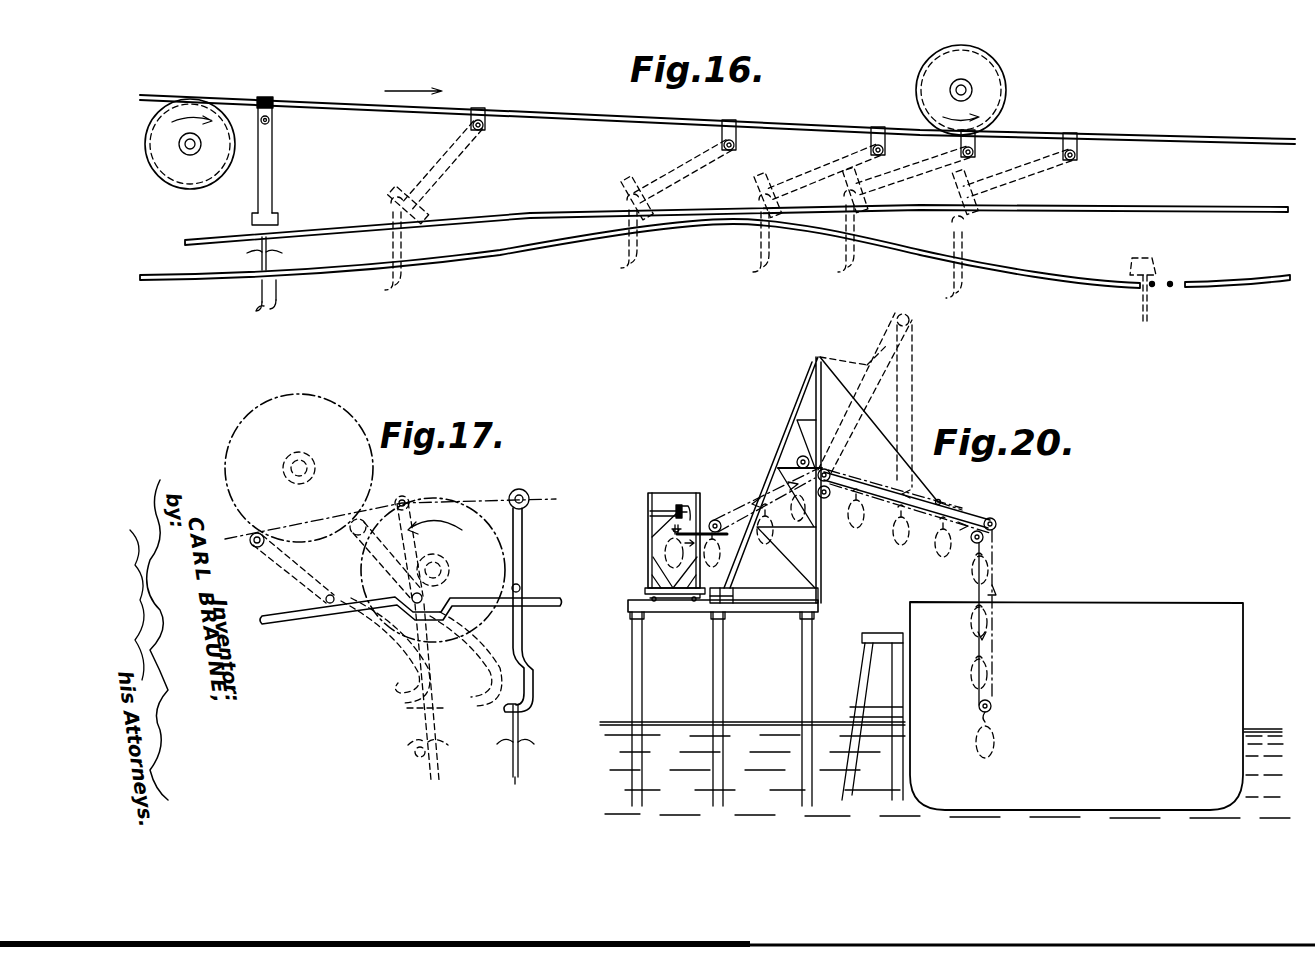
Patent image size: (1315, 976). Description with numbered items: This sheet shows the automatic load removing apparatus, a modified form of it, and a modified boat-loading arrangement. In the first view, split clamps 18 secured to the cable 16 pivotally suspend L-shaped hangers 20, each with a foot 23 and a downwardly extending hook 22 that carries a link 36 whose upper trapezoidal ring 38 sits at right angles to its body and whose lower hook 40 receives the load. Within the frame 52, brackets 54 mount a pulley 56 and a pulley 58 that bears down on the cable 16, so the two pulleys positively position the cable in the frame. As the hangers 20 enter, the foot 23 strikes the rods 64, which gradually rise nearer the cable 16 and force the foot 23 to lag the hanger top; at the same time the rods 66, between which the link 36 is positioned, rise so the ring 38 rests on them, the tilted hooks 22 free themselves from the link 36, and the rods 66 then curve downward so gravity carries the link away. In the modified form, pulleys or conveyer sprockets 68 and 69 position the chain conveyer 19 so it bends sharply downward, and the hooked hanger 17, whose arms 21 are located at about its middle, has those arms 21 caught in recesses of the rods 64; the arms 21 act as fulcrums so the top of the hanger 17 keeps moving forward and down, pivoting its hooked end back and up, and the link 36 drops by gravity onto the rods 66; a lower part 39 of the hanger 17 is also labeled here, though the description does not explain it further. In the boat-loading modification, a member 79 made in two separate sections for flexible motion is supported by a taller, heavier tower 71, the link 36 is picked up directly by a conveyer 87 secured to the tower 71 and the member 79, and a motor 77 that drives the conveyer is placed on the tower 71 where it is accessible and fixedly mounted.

In FIG. 16, the cable 16 is at (533, 112).
In FIG. 20, the cable 16 is at (676, 506).
In FIG. 17, the hooked hanger 17 is at (522, 629).
In FIG. 16, the split clamps 18 is at (272, 100).
In FIG. 17, the chain conveyer 19 is at (456, 499).
In FIG. 16, the L-shaped hanger 20 is at (273, 190).
In FIG. 20, the L-shaped hanger 20 is at (687, 500).
In FIG. 17, the arms 21 is at (521, 589).
In FIG. 16, the hook 22 is at (272, 240).
In FIG. 16, the foot 23 is at (256, 221).
In FIG. 16, the link 36 is at (278, 292).
In FIG. 16, the trapezoidal ring 38 is at (258, 260).
In FIG. 17, the hook rod 39 is at (508, 722).
In FIG. 16, the hook 40 is at (258, 311).
In FIG. 17, the hook 40 is at (533, 744).
In FIG. 20, the frame 52 is at (652, 547).
In FIG. 20, the brackets 54 is at (650, 514).
In FIG. 16, the pulley 56 is at (222, 125).
In FIG. 20, the pulley 56 is at (676, 509).
In FIG. 16, the pulley 58 is at (992, 91).
In FIG. 16, the rods 64 is at (512, 216).
In FIG. 17, the rods 64 is at (293, 620).
In FIG. 16, the rods 66 is at (535, 250).
In FIG. 17, the conveyer sprocket 68 is at (313, 401).
In FIG. 17, the conveyer sprocket 69 is at (358, 566).
In FIG. 20, the tower 71 is at (803, 401).
In FIG. 20, the motor 77 is at (799, 458).
In FIG. 20, the member 79 is at (892, 341).
In FIG. 20, the conveyer 87 is at (747, 500).